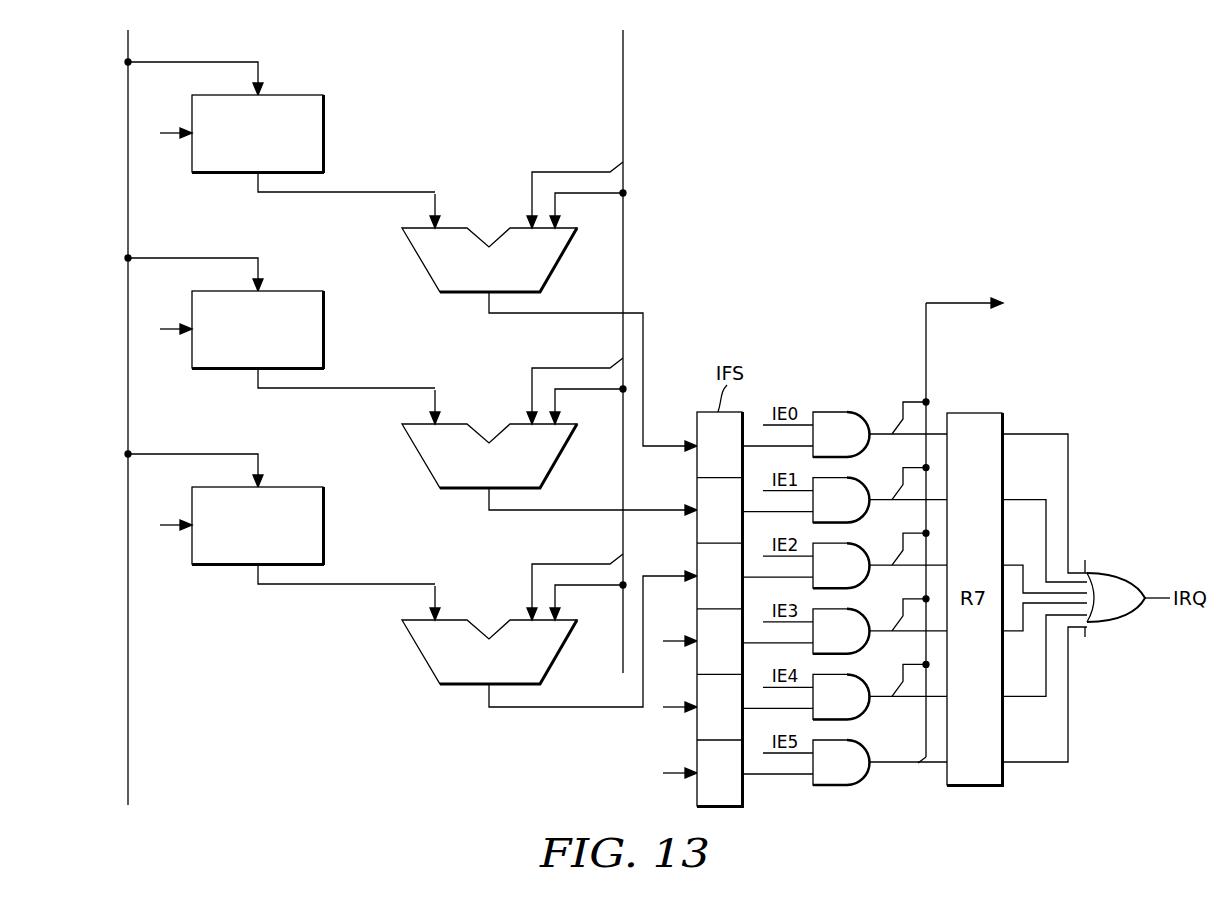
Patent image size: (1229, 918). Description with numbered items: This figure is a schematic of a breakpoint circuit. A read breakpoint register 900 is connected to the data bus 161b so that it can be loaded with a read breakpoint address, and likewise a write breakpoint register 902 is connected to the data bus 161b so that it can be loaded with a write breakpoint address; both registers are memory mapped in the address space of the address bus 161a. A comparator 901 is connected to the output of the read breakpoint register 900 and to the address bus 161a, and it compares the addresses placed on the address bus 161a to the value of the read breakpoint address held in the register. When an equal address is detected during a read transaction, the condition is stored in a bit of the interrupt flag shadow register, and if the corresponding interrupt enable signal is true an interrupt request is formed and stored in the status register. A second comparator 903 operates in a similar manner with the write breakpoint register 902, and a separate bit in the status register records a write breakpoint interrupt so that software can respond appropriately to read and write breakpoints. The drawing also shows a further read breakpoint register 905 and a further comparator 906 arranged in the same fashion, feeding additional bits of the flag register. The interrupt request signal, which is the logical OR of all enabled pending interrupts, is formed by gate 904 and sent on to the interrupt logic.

The address bus 161a is at (623, 100).
The data bus 161b is at (128, 100).
The read breakpoint register 900 is at (292, 93).
The comparator 901 is at (418, 262).
The write breakpoint register 902 is at (292, 289).
The comparator 903 is at (418, 458).
The gate 904 is at (969, 527).
The read breakpoint register 905 is at (292, 485).
The comparator 906 is at (418, 654).